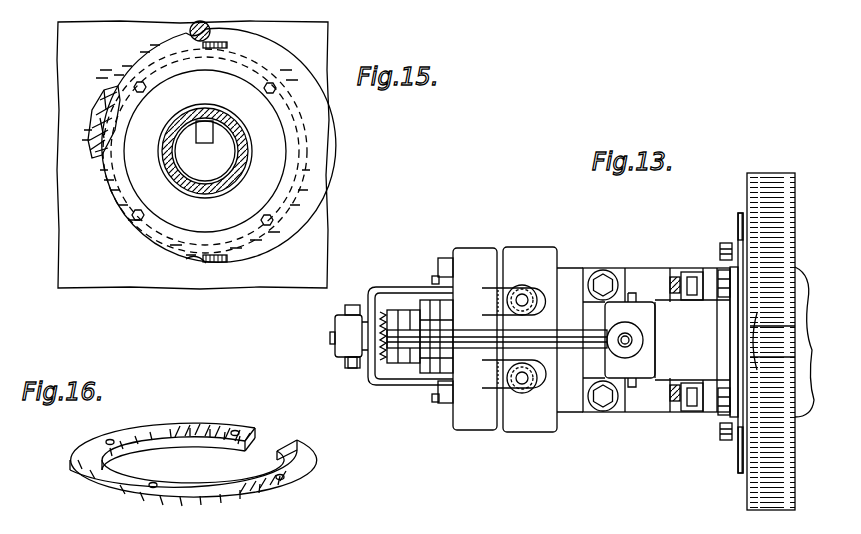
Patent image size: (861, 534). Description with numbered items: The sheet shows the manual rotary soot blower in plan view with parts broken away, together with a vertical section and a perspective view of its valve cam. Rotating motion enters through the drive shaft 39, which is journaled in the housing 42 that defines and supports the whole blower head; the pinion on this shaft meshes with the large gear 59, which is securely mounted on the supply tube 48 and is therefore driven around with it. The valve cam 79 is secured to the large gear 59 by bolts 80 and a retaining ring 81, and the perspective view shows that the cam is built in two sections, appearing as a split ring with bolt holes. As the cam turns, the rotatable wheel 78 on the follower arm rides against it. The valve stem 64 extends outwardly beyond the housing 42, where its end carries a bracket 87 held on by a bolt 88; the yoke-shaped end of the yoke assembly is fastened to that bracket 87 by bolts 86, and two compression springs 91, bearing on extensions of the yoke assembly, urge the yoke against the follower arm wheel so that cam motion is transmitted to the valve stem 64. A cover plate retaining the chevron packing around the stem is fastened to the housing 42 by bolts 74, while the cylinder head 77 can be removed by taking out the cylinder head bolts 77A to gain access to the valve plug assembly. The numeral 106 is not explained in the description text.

In FIG. 13, the drive shaft 39 is at (590, 333).
In FIG. 13, the housing 42 is at (807, 263).
In FIG. 15, the supply tube 48 is at (236, 164).
In FIG. 15, the large gear 59 is at (327, 205).
In FIG. 13, the valve stem 64 is at (332, 337).
In FIG. 13, the bolts 74 is at (420, 373).
In FIG. 13, the cylinder head 77 is at (473, 431).
In FIG. 13, the cylinder head bolts 77A is at (442, 253).
In FIG. 15, the rotatable wheel 78 is at (212, 35).
In FIG. 15, the valve cam 79 is at (142, 255).
In FIG. 16, the valve cam 79 is at (268, 492).
In FIG. 13, the valve cam 79 is at (735, 215).
In FIG. 15, the bolts 80 is at (276, 86).
In FIG. 13, the bolts 80 is at (720, 251).
In FIG. 15, the retaining ring 81 is at (294, 157).
In FIG. 13, the retaining ring 81 is at (731, 241).
In FIG. 13, the bolts 86 is at (437, 278).
In FIG. 13, the bracket 87 is at (325, 330).
In FIG. 13, the bolt 88 is at (352, 369).
In FIG. 13, the compression springs 91 is at (537, 287).
In FIG. 15, the key 106 is at (204, 146).